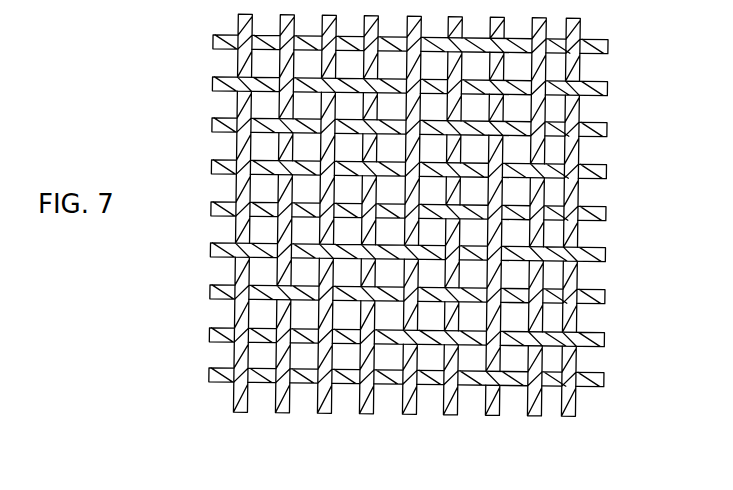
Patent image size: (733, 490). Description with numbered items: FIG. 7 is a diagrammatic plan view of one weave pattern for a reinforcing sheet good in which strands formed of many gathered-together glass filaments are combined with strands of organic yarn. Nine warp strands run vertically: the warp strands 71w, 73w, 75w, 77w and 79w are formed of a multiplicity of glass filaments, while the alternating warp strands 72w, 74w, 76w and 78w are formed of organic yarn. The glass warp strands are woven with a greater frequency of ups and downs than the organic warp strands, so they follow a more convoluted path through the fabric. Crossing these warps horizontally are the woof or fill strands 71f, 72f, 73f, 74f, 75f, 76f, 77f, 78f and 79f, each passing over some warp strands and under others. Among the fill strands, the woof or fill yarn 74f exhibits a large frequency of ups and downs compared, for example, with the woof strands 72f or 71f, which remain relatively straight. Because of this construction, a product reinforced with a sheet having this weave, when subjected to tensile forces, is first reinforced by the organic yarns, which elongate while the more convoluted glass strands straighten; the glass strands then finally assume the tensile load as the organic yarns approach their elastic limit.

The warp strand 71w is at (245, 412).
The warp strand 72w is at (287, 412).
The warp strand 73w is at (329, 412).
The warp strand 74w is at (371, 412).
The warp strand 75w is at (414, 412).
The warp strand 76w is at (455, 412).
The warp strand 77w is at (497, 412).
The warp strand 78w is at (539, 412).
The warp strand 79w is at (573, 412).
The woof strand 71f is at (213, 42).
The woof strand 72f is at (213, 84).
The woof strand 73f is at (213, 125).
The woof or fill yarn 74f is at (213, 167).
The woof strand 75f is at (213, 209).
The woof strand 76f is at (213, 250).
The woof strand 77f is at (213, 292).
The woof strand 78f is at (213, 335).
The woof strand 79f is at (213, 375).